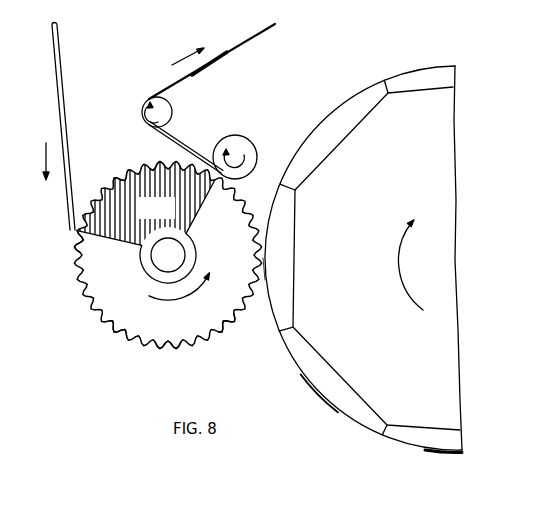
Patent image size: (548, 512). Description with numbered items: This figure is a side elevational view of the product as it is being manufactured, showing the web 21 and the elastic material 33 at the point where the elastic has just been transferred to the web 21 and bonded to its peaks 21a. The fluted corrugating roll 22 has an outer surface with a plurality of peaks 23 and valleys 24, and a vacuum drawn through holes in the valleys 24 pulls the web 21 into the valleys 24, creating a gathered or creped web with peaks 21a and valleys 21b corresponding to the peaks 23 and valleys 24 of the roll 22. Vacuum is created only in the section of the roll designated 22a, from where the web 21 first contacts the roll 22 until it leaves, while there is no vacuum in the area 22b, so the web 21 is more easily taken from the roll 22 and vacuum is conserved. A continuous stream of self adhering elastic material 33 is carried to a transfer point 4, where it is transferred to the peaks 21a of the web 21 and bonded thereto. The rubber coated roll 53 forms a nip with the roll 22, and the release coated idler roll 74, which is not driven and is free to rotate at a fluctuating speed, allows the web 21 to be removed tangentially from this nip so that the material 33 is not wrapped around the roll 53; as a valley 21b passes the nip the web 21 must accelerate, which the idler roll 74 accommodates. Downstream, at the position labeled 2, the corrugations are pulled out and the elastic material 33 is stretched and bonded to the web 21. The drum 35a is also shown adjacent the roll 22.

The position 2 is at (198, 150).
The transfer point 4 is at (263, 297).
The web 21 is at (63, 98).
The peaks 21a is at (79, 300).
The valleys 21b is at (110, 330).
The fluted corrugating roll 22 is at (105, 187).
The vacuum section of the roll 22a is at (179, 300).
The non-vacuum area of the roll 22b is at (170, 216).
The peaks 23 is at (125, 167).
The valleys 24 is at (163, 163).
The self adhering elastic material 33 is at (210, 63).
The drum 35a is at (457, 260).
The rubber coated roll 53 is at (241, 138).
The release coated idler roll 74 is at (172, 110).